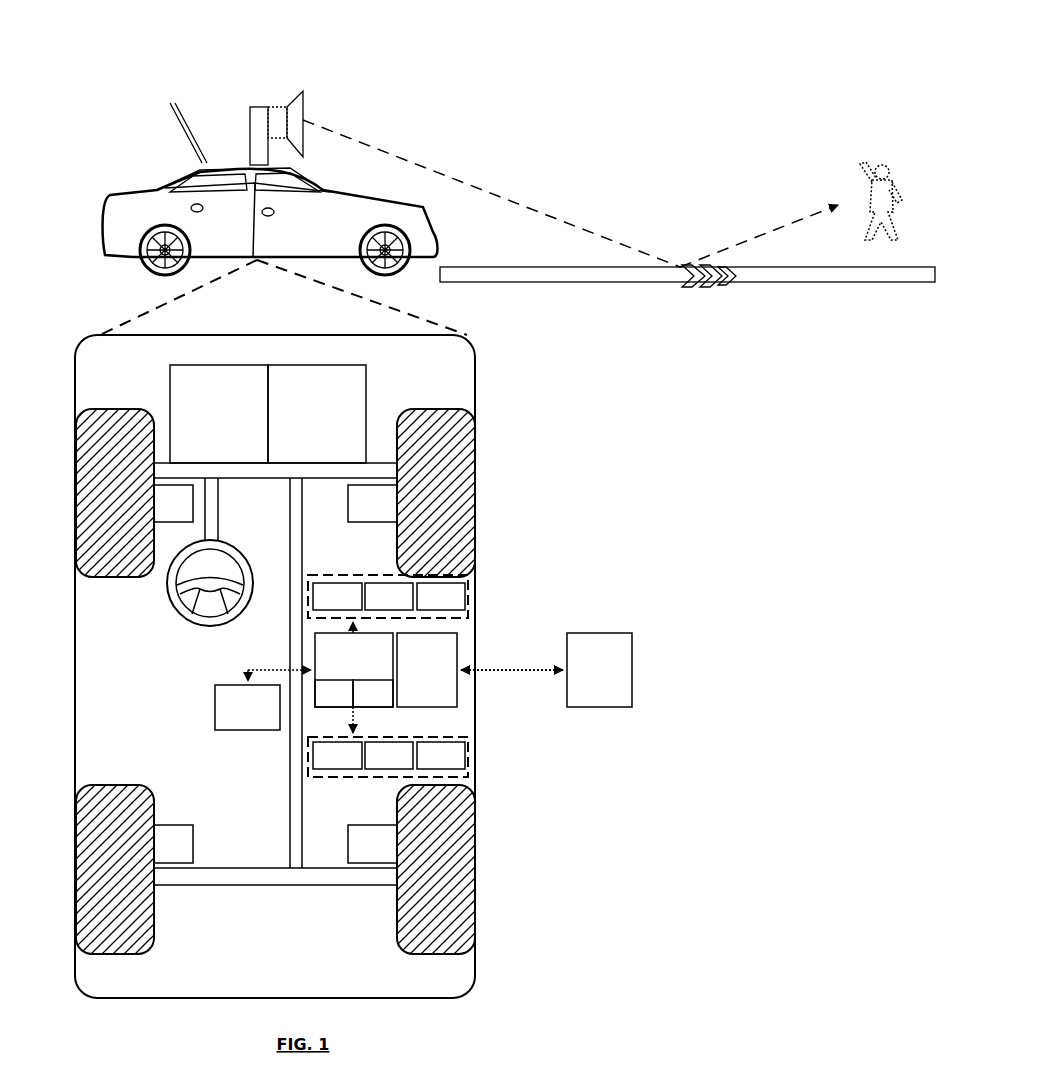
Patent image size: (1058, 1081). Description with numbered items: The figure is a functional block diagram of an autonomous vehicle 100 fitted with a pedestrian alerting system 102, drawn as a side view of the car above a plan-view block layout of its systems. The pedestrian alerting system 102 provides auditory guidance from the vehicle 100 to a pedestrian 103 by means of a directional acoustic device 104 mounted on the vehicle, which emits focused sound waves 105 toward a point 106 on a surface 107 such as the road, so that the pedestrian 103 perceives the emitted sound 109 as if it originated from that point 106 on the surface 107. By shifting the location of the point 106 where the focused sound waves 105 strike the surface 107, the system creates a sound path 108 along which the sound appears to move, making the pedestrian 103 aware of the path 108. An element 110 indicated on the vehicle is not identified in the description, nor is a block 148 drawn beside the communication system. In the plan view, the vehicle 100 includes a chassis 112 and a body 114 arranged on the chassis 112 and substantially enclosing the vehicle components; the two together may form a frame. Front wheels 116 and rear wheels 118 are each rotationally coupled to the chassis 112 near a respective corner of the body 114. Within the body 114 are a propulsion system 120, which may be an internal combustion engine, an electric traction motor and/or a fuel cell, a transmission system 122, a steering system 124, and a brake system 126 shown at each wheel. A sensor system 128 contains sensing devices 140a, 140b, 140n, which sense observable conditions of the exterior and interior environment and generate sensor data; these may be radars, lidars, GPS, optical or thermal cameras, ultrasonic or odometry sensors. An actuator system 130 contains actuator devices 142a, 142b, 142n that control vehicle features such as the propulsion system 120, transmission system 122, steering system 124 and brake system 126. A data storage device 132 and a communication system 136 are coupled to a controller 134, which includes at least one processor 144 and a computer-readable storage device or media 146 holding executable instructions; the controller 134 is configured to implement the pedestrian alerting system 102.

The vehicle 100 is at (103, 240).
The pedestrian alerting system 102 is at (502, 342).
The pedestrian 103 is at (866, 180).
The directional acoustic device 104 is at (258, 107).
The focused sound waves 105 is at (464, 180).
The point 106 is at (691, 264).
The surface 107 is at (806, 267).
The path 108 is at (716, 283).
The emitted sound 109 is at (765, 232).
The sensor 110 is at (223, 215).
The chassis 112 is at (290, 812).
The body 114 is at (75, 620).
The front wheels 116 is at (114, 409).
The rear wheels 118 is at (131, 954).
The propulsion system 120 is at (219, 414).
The transmission system 122 is at (317, 414).
The steering system 124 is at (240, 503).
The brake system 126 is at (275, 674).
The sensor system 128 is at (316, 578).
The actuator system 130 is at (318, 778).
The data storage device 132 is at (247, 707).
The controller 134 is at (354, 670).
The communication system 136 is at (427, 670).
The sensing device 140a is at (337, 596).
The sensing device 140b is at (389, 596).
The sensing device 140n is at (441, 596).
The actuator device 142a is at (337, 755).
The actuator device 142b is at (389, 755).
The actuator device 142n is at (441, 755).
The processor 144 is at (334, 693).
The computer-readable storage device or media 146 is at (373, 693).
The remote server 148 is at (599, 670).